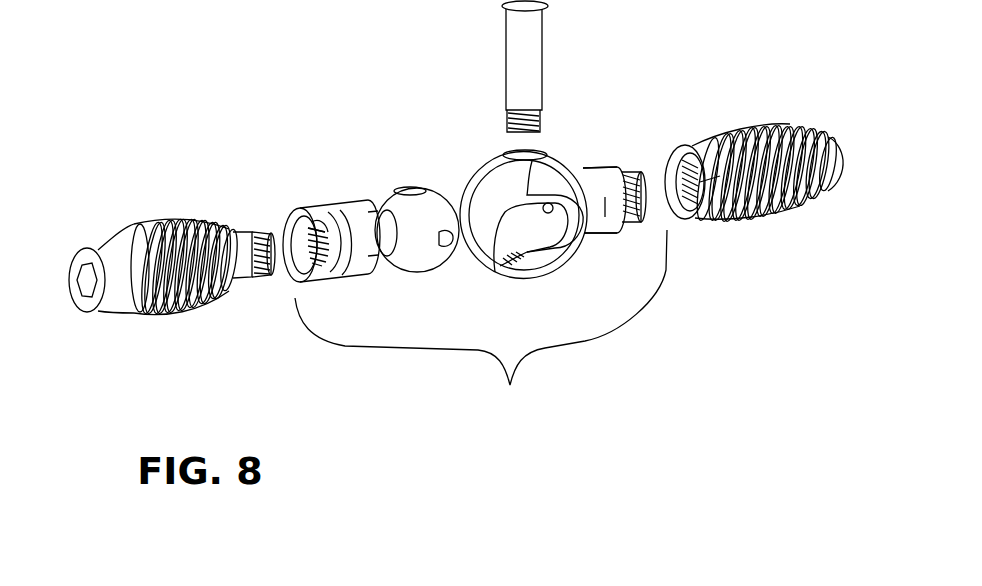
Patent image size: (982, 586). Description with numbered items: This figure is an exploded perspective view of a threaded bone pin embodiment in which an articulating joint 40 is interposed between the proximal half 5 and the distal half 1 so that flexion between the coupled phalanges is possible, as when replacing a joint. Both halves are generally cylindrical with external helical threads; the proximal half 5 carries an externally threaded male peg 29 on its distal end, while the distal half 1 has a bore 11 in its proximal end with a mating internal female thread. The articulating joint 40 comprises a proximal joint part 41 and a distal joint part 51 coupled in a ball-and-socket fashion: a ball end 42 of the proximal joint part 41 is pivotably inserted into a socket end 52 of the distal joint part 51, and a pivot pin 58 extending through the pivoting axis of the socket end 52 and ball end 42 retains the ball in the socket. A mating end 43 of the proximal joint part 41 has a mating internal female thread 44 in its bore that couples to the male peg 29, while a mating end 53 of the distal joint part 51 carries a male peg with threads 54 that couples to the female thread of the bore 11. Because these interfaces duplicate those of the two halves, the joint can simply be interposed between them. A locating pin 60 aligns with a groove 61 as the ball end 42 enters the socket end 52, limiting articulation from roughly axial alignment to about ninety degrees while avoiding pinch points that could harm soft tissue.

The distal half 1 is at (752, 118).
The proximal half 5 is at (197, 207).
The bore 11 is at (670, 195).
The male peg 29 is at (255, 283).
The articulating joint 40 is at (481, 333).
The proximal joint part 41 is at (373, 190).
The ball end 42 is at (436, 191).
The mating end 43 is at (333, 200).
The mating internal female thread 44 is at (301, 262).
The distal joint part 51 is at (541, 204).
The socket end 52 is at (578, 255).
The mating end 53 is at (618, 232).
The threads 54 is at (633, 167).
The pivot pin 58 is at (548, 65).
The locating pin 60 is at (495, 270).
The groove 61 is at (447, 241).